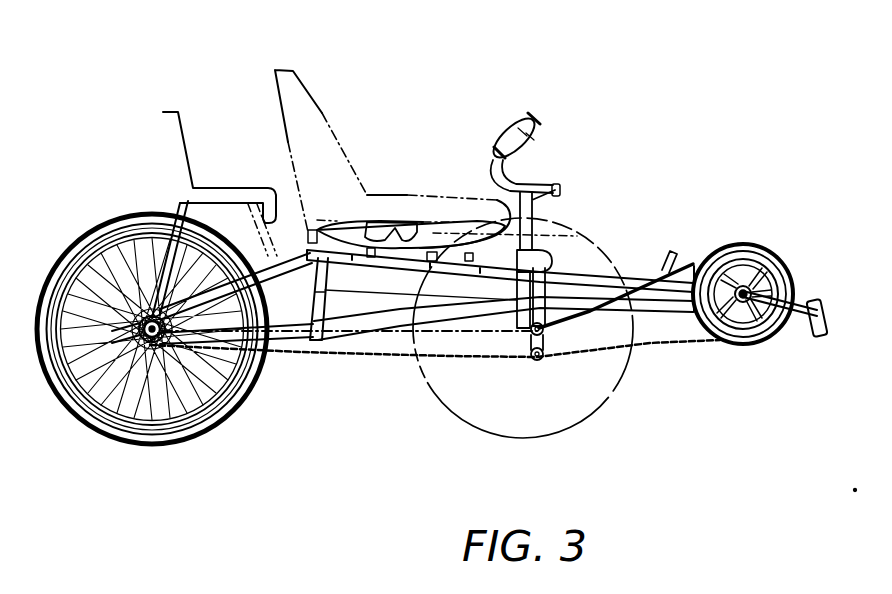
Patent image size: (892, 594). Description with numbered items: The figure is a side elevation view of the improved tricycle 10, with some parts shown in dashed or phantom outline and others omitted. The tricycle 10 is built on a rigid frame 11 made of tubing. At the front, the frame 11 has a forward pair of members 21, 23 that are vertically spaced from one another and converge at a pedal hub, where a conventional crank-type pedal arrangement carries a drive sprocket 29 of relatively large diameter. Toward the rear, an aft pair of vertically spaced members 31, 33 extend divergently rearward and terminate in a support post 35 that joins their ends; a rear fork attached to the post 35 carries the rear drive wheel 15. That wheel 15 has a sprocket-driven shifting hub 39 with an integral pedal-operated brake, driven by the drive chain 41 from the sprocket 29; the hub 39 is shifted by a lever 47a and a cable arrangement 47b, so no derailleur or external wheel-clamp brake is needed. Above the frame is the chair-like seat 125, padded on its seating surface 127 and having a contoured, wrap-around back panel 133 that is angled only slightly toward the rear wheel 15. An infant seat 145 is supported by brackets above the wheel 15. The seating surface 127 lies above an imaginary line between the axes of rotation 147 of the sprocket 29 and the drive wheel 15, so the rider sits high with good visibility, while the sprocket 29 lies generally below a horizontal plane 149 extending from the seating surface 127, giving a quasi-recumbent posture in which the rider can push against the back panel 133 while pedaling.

The tricycle 10 is at (497, 88).
The frame 11 is at (389, 348).
The rear drive wheel 15 is at (140, 212).
The forward frame member 21 is at (644, 275).
The forward frame member 23 is at (658, 298).
The drive sprocket 29 is at (750, 246).
The aft frame member 31 is at (350, 263).
The aft frame member 33 is at (337, 341).
The support post 35 is at (328, 311).
The shifting hub 39 is at (138, 357).
The drive chain 41 is at (287, 362).
The lever 47a is at (397, 224).
The cable arrangement 47b is at (552, 254).
The seat 125 is at (302, 82).
The seating surface 127 is at (449, 173).
The back panel 133 is at (289, 142).
The infant seat 145 is at (163, 112).
The axes of rotation 147 is at (186, 375).
The plane 149 is at (561, 236).